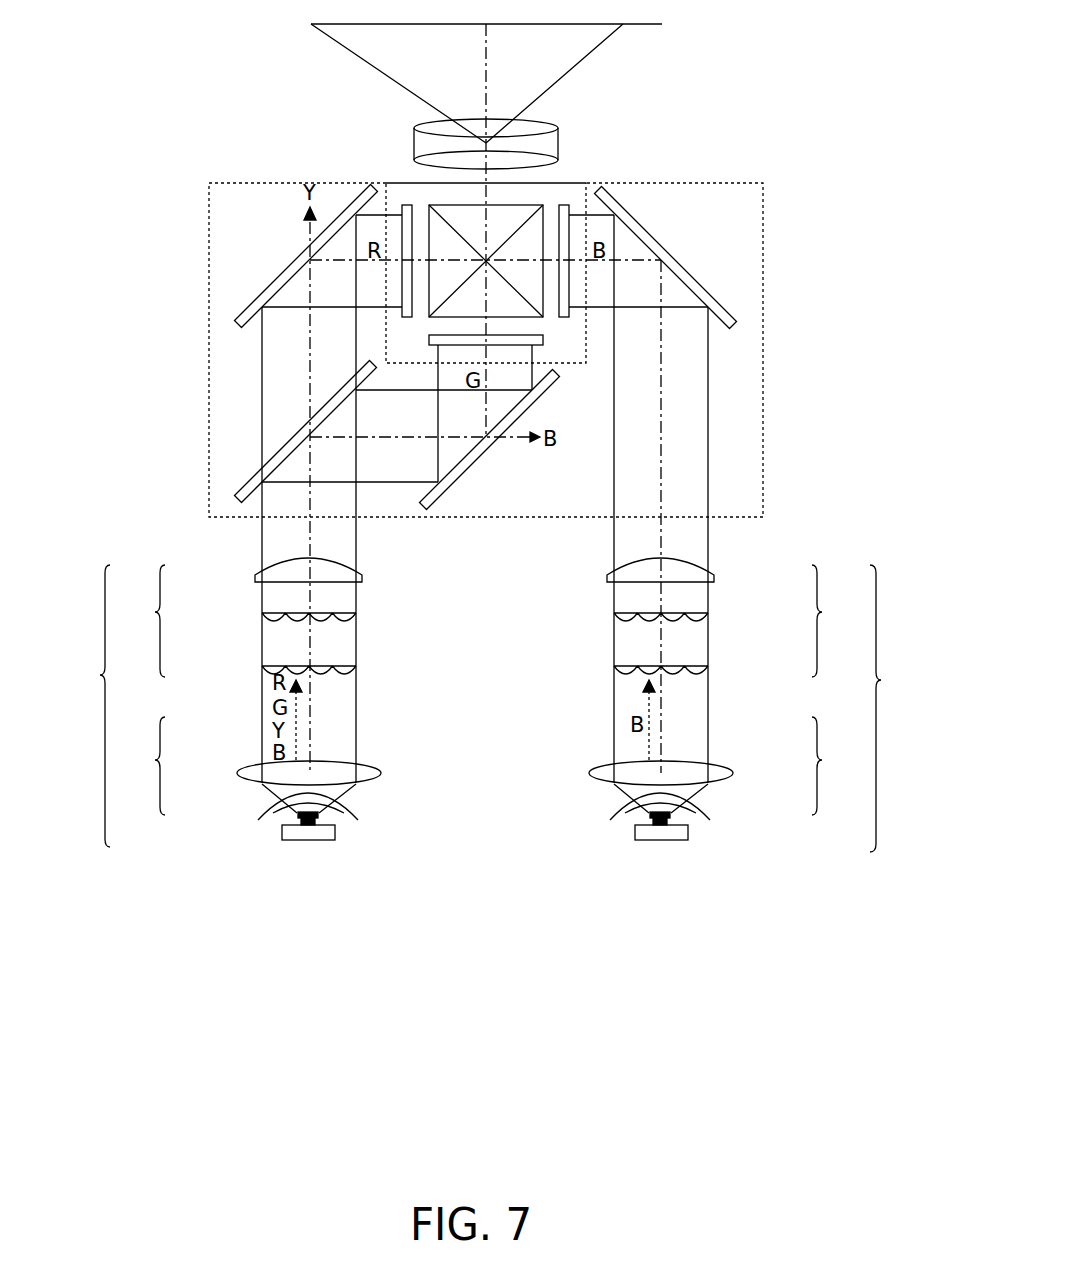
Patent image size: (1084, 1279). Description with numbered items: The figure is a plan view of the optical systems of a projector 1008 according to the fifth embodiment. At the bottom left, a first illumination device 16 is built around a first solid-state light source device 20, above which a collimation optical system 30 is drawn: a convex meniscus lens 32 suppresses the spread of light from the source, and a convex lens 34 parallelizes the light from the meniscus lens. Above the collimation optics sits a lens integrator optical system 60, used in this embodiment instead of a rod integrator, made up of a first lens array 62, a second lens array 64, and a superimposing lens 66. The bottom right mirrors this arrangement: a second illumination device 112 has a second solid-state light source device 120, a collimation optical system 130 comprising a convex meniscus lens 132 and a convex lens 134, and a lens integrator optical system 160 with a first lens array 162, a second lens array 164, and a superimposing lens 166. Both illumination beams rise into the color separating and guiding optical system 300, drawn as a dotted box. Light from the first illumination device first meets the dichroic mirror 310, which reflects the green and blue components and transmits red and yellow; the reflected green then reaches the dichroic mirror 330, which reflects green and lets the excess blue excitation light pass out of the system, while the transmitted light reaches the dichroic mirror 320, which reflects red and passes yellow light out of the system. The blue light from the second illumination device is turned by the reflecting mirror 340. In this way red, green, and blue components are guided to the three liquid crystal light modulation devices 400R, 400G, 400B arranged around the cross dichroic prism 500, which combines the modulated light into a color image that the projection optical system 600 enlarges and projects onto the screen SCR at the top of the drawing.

The projector 1008 is at (843, 40).
The screen SCR is at (647, 27).
The projection optical system 600 is at (415, 145).
The cross dichroic prism 500 is at (510, 205).
The liquid crystal light modulation device 400R is at (407, 205).
The liquid crystal light modulation device 400G is at (545, 340).
The liquid crystal light modulation device 400B is at (565, 205).
The color separating and guiding optical system 300 is at (208, 357).
The dichroic mirror 310 is at (243, 487).
The dichroic mirror 320 is at (245, 307).
The dichroic mirror 330 is at (473, 470).
The reflecting mirror 340 is at (727, 305).
The first illumination device 16 is at (224, 704).
The lens integrator optical system 60 is at (241, 620).
The superimposing lens 66 is at (255, 574).
The second lens array 64 is at (262, 613).
The first lens array 62 is at (262, 666).
The collimation optical system 30 is at (250, 769).
The convex lens 34 is at (243, 770).
The convex meniscus lens 32 is at (262, 805).
The first solid-state light source device 20 is at (260, 829).
The second illumination device 112 is at (759, 705).
The lens integrator optical system 160 is at (740, 620).
The superimposing lens 166 is at (715, 574).
The second lens array 164 is at (708, 613).
The first lens array 162 is at (708, 666).
The collimation optical system 130 is at (730, 769).
The convex lens 134 is at (727, 770).
The convex meniscus lens 132 is at (708, 805).
The second solid-state light source device 120 is at (709, 830).